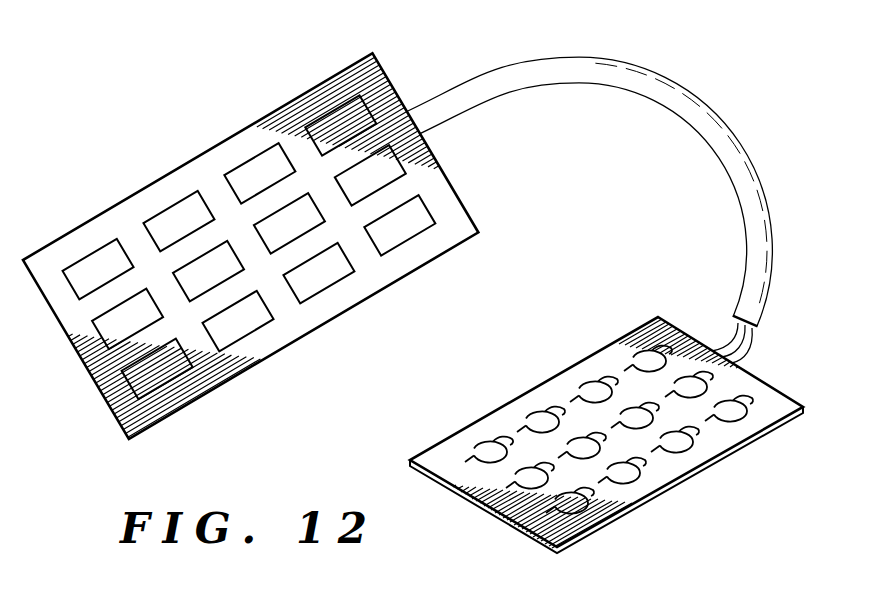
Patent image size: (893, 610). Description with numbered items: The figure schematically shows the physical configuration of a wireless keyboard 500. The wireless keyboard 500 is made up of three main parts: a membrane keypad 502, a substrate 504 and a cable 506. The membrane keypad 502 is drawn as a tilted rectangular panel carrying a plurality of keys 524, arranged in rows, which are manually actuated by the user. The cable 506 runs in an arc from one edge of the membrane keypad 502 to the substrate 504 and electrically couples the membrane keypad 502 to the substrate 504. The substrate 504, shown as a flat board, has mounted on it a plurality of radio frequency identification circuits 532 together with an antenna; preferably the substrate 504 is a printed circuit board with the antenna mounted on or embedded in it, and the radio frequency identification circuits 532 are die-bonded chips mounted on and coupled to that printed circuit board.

The wireless keyboard 500 is at (413, 300).
The membrane keypad 502 is at (68, 335).
The substrate 504 is at (482, 510).
The cable 506 is at (710, 106).
The keys 524 is at (340, 120).
The radio frequency identification circuits 532 is at (642, 470).